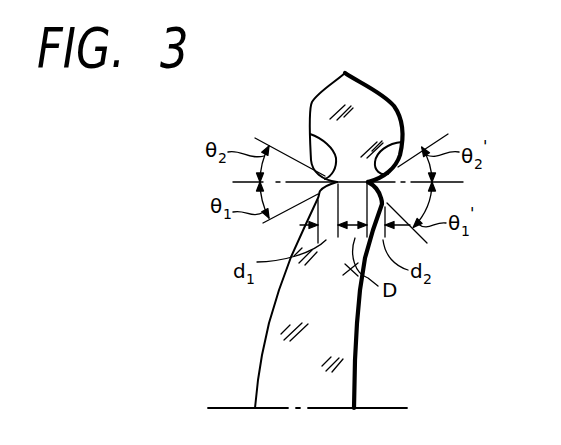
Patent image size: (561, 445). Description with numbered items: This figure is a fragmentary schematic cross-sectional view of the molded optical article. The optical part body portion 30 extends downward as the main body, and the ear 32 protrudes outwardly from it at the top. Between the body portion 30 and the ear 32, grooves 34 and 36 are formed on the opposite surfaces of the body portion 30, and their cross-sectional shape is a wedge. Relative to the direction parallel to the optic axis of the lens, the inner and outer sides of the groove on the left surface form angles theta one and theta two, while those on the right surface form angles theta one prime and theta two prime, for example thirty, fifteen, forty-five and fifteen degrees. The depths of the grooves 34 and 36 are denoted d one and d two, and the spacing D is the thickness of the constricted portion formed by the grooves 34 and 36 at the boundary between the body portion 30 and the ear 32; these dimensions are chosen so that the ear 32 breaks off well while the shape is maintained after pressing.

The optical part body portion 30 is at (340, 340).
The ear 32 is at (368, 102).
The groove 34 is at (310, 134).
The groove 36 is at (402, 142).